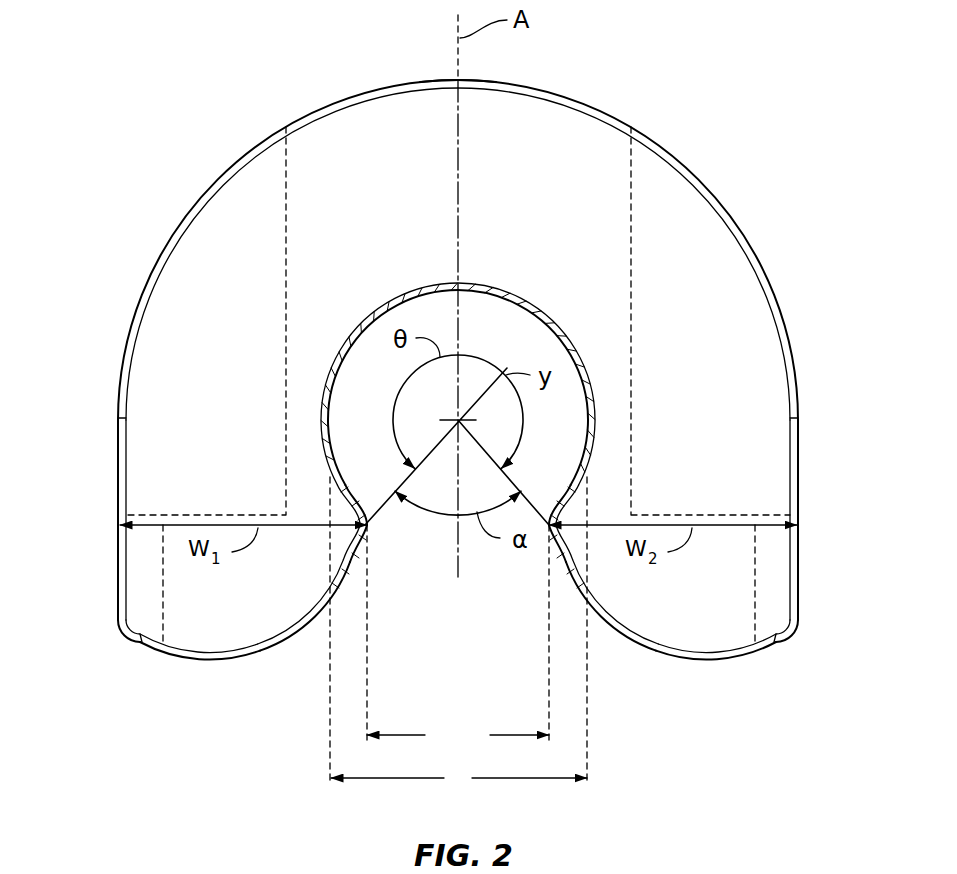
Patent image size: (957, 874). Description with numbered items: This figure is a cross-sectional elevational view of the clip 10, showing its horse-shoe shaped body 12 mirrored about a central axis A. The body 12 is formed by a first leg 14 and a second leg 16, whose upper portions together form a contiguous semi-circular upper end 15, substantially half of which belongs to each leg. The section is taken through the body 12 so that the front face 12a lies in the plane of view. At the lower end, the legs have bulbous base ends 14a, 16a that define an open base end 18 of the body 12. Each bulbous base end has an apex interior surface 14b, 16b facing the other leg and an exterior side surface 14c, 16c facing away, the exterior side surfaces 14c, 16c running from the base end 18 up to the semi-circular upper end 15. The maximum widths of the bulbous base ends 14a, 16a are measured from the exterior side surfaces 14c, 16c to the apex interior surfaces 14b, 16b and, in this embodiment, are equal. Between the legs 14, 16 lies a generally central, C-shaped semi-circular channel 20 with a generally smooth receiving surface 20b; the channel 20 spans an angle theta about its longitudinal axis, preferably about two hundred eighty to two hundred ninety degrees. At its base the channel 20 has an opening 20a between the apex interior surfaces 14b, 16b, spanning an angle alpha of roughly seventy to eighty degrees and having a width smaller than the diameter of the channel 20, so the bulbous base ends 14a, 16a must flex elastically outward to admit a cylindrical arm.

The clip 10 is at (737, 106).
The body 12 is at (232, 162).
The front face 12a is at (560, 126).
The first leg 14 is at (185, 465).
The bulbous base end of first leg 14a is at (200, 633).
The apex interior surface of first leg 14b is at (313, 627).
The exterior side surface of first leg 14c is at (120, 606).
The semi-circular upper end 15 is at (388, 86).
The second leg 16 is at (733, 463).
The bulbous base end of second leg 16a is at (717, 633).
The apex interior surface of second leg 16b is at (605, 627).
The exterior side surface of second leg 16c is at (796, 606).
The open base end 18 is at (497, 625).
The semi-circular channel 20 is at (357, 406).
The opening of channel 20a is at (367, 540).
The receiving surface 20b is at (345, 370).